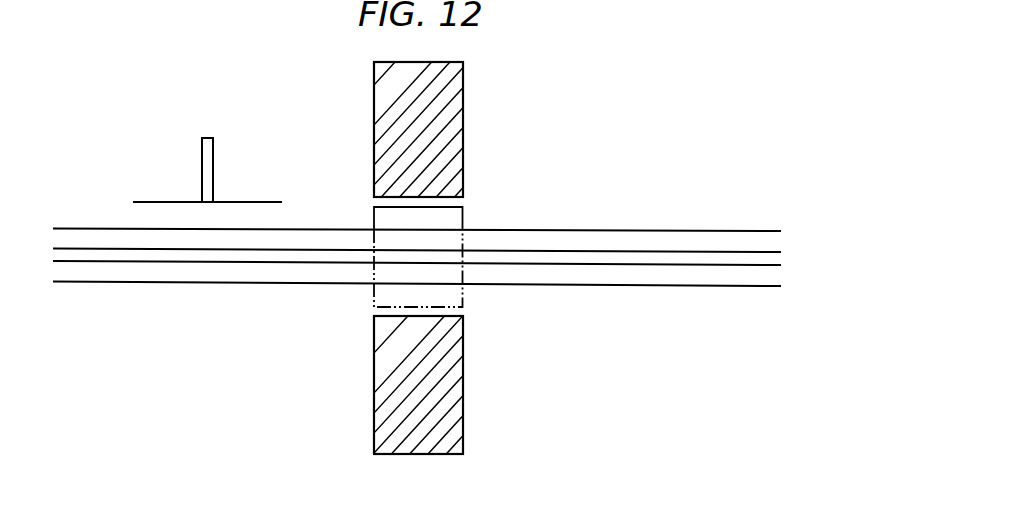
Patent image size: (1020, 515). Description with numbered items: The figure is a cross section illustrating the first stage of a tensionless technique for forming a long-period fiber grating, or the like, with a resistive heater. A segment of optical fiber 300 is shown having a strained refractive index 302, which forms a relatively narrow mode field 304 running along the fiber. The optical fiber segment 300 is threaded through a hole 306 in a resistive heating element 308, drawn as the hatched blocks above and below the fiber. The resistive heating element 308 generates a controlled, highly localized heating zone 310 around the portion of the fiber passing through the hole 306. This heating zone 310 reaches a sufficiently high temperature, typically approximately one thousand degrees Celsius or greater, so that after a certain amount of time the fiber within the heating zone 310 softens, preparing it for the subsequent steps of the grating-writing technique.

The segment of optical fiber 300 is at (728, 192).
The strained refractive index 302 is at (242, 150).
The mode field 304 is at (747, 265).
The hole 306 is at (463, 317).
The resistive heating element 308 is at (457, 105).
The heating zone 310 is at (463, 222).